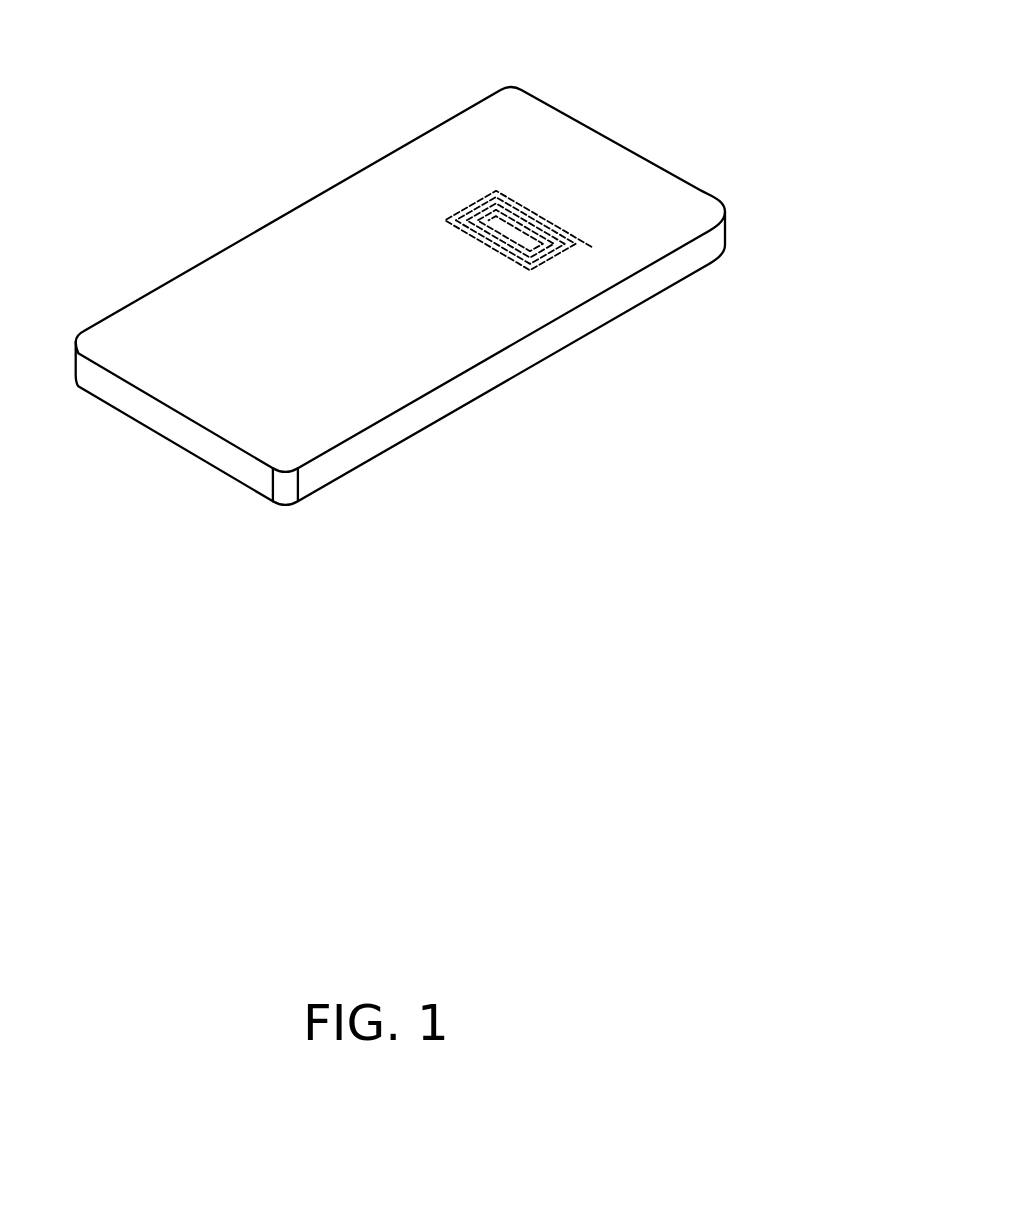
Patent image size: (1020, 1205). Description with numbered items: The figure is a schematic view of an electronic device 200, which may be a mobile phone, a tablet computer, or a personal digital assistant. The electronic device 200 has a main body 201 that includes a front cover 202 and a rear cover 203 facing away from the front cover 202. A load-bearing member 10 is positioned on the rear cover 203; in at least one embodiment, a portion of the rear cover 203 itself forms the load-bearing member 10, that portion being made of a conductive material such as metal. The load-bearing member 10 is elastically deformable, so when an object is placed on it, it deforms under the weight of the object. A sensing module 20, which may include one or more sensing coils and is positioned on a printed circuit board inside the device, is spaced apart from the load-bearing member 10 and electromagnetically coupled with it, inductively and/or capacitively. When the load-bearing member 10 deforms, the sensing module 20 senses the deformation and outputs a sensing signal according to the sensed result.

The electronic device 200 is at (409, 286).
The main body 201 is at (502, 372).
The front cover 202 is at (593, 331).
The rear cover 203 is at (543, 125).
The sensing module 20 is at (495, 201).
The load-bearing member 10 is at (530, 223).